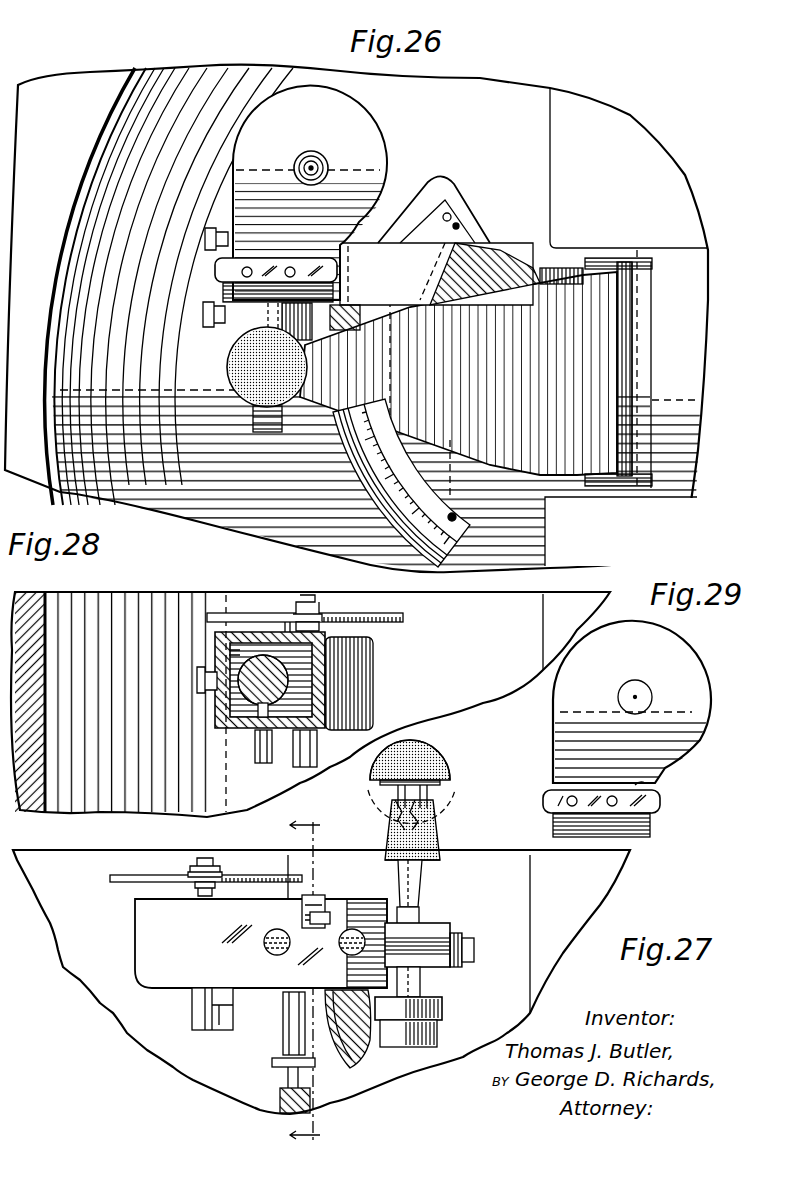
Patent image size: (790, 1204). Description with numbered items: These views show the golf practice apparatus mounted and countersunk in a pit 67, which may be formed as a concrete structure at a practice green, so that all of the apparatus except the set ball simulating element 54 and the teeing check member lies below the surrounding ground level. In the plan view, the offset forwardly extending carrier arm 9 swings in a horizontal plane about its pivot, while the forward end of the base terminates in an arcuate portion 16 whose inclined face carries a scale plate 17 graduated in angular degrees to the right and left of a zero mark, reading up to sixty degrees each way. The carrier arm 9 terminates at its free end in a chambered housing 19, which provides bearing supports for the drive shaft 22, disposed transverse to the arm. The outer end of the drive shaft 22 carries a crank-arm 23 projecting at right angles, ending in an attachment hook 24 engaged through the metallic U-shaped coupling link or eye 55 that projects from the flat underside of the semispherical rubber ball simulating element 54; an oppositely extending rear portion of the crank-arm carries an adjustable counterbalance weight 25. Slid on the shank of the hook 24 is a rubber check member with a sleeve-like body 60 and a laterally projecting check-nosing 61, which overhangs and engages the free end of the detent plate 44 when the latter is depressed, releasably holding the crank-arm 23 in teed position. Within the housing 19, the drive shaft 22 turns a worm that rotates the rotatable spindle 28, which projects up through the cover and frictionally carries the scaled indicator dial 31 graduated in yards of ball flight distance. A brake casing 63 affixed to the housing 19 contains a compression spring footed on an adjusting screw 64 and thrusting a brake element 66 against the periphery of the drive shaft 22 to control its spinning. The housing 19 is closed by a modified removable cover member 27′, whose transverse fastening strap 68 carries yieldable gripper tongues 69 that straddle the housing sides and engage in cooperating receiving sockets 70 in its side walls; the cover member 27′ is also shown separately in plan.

In FIG. 26, the carrier arm 9 is at (520, 366).
In FIG. 27, the carrier arm 9 is at (332, 1075).
In FIG. 26, the arcuate portion 16 is at (430, 186).
In FIG. 26, the scale plate 17 is at (400, 425).
In FIG. 28, the chambered housing 19 is at (310, 698).
In FIG. 27, the chambered housing 19 is at (140, 938).
In FIG. 28, the drive shaft 22 is at (317, 730).
In FIG. 27, the drive shaft 22 is at (428, 925).
In FIG. 27, the crank-arm 23 is at (422, 895).
In FIG. 27, the attachment hook 24 is at (393, 812).
In FIG. 27, the counterbalance weight 25 is at (442, 1010).
In FIG. 26, the removable cover member 27′ is at (362, 128).
In FIG. 28, the removable cover member 27′ is at (258, 632).
In FIG. 29, the removable cover member 27′ is at (705, 702).
In FIG. 27, the removable cover member 27′ is at (150, 892).
In FIG. 26, the rotatable spindle 28 is at (330, 175).
In FIG. 27, the rotatable spindle 28 is at (293, 981).
In FIG. 28, the scaled indicator dial 31 is at (305, 608).
In FIG. 27, the scaled indicator dial 31 is at (158, 872).
In FIG. 26, the detent plate 44 is at (458, 386).
In FIG. 26, the ball simulating element 54 is at (245, 372).
In FIG. 27, the ball simulating element 54 is at (442, 760).
In FIG. 27, the coupling link or eye 55 is at (430, 792).
In FIG. 27, the check member sleeve-like body 60 is at (433, 835).
In FIG. 27, the check-nosing 61 is at (438, 856).
In FIG. 28, the brake casing 63 is at (262, 762).
In FIG. 27, the brake casing 63 is at (285, 1035).
In FIG. 27, the adjusting screw 64 is at (285, 1076).
In FIG. 28, the brake element 66 is at (262, 728).
In FIG. 26, the pit 67 is at (82, 228).
In FIG. 28, the pit 67 is at (45, 612).
In FIG. 27, the pit 67 is at (88, 956).
In FIG. 26, the fastening strap 68 is at (245, 262).
In FIG. 28, the fastening strap 68 is at (283, 632).
In FIG. 29, the fastening strap 68 is at (645, 795).
In FIG. 27, the fastening strap 68 is at (316, 895).
In FIG. 26, the gripper tongues 69 is at (215, 268).
In FIG. 28, the gripper tongues 69 is at (215, 655).
In FIG. 29, the gripper tongues 69 is at (543, 800).
In FIG. 27, the gripper tongues 69 is at (310, 938).
In FIG. 28, the receiving sockets 70 is at (210, 650).
In FIG. 27, the receiving sockets 70 is at (310, 916).